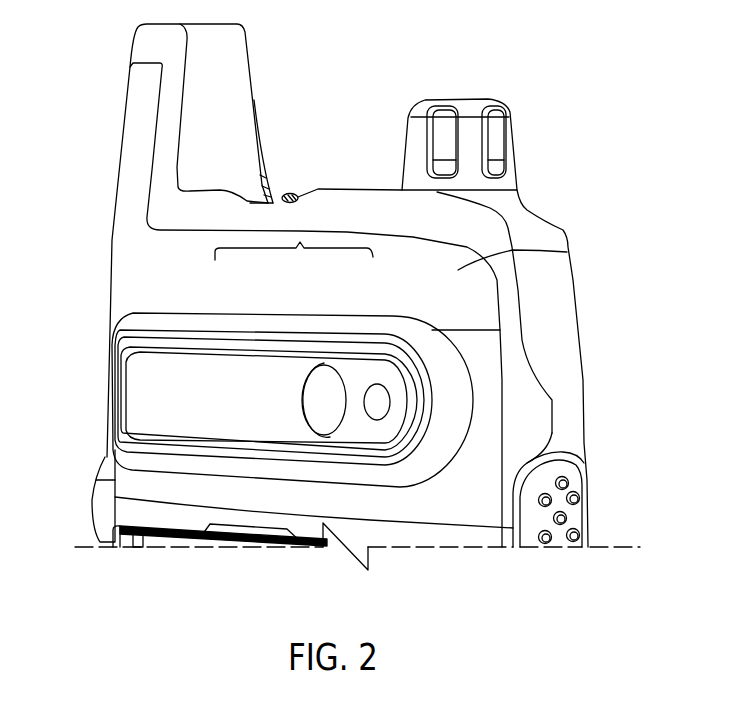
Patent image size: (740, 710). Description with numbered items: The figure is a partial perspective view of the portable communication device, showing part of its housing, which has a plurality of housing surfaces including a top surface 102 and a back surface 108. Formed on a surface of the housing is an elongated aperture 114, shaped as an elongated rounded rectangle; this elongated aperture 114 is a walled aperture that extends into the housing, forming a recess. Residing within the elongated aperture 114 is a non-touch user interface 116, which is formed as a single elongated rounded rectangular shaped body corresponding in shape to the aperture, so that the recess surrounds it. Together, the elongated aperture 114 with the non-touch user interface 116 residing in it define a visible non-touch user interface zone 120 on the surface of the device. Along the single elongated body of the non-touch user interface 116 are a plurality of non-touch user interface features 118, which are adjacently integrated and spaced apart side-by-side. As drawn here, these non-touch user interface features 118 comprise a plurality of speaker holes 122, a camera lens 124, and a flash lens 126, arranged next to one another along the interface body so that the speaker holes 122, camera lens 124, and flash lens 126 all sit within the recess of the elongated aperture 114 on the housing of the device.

The top surface 102 is at (567, 252).
The back surface 108 is at (575, 287).
The elongated aperture 114 is at (123, 353).
The non-touch user interface 116 is at (197, 363).
The non-touch user interface features 118 is at (300, 245).
The visible non-touch user interface zone 120 is at (83, 300).
The speaker holes 122 is at (250, 337).
The camera lens 124 is at (325, 365).
The flash lens 126 is at (377, 400).